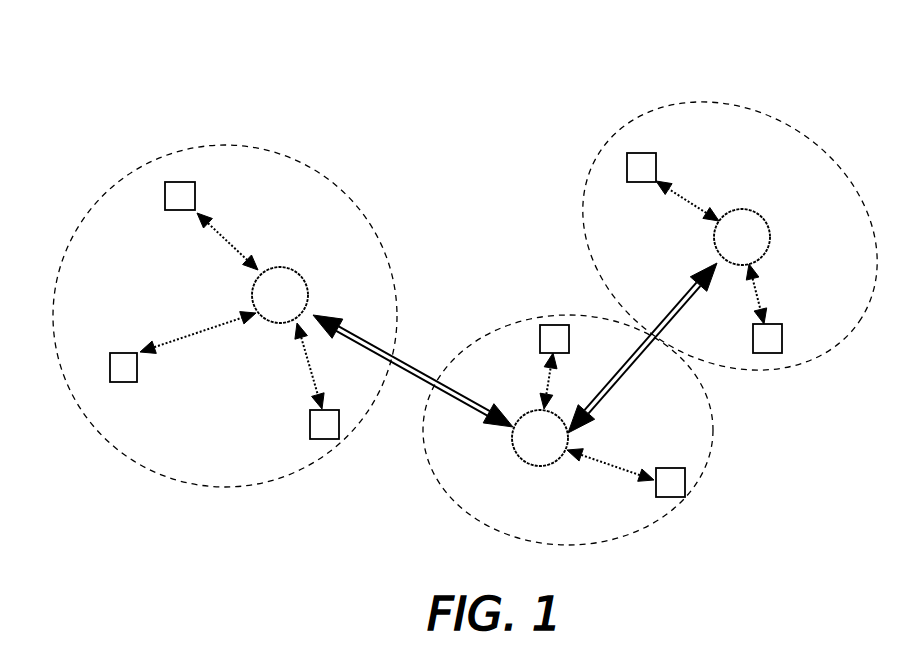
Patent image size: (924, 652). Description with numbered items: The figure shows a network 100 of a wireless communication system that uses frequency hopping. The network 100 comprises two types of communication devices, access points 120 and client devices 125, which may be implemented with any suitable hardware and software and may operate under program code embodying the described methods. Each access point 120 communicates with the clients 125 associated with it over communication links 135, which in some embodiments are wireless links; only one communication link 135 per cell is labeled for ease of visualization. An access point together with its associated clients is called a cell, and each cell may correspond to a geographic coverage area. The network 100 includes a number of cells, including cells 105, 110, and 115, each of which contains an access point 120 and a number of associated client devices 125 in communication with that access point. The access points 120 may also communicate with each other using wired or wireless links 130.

The network 100 is at (93, 47).
The cell 105 is at (118, 165).
The cell 110 is at (714, 450).
The cell 115 is at (592, 123).
The access point 120 is at (277, 270).
The client device 125 is at (194, 192).
The wired or wireless link 130 is at (410, 372).
The communication link 135 is at (190, 332).